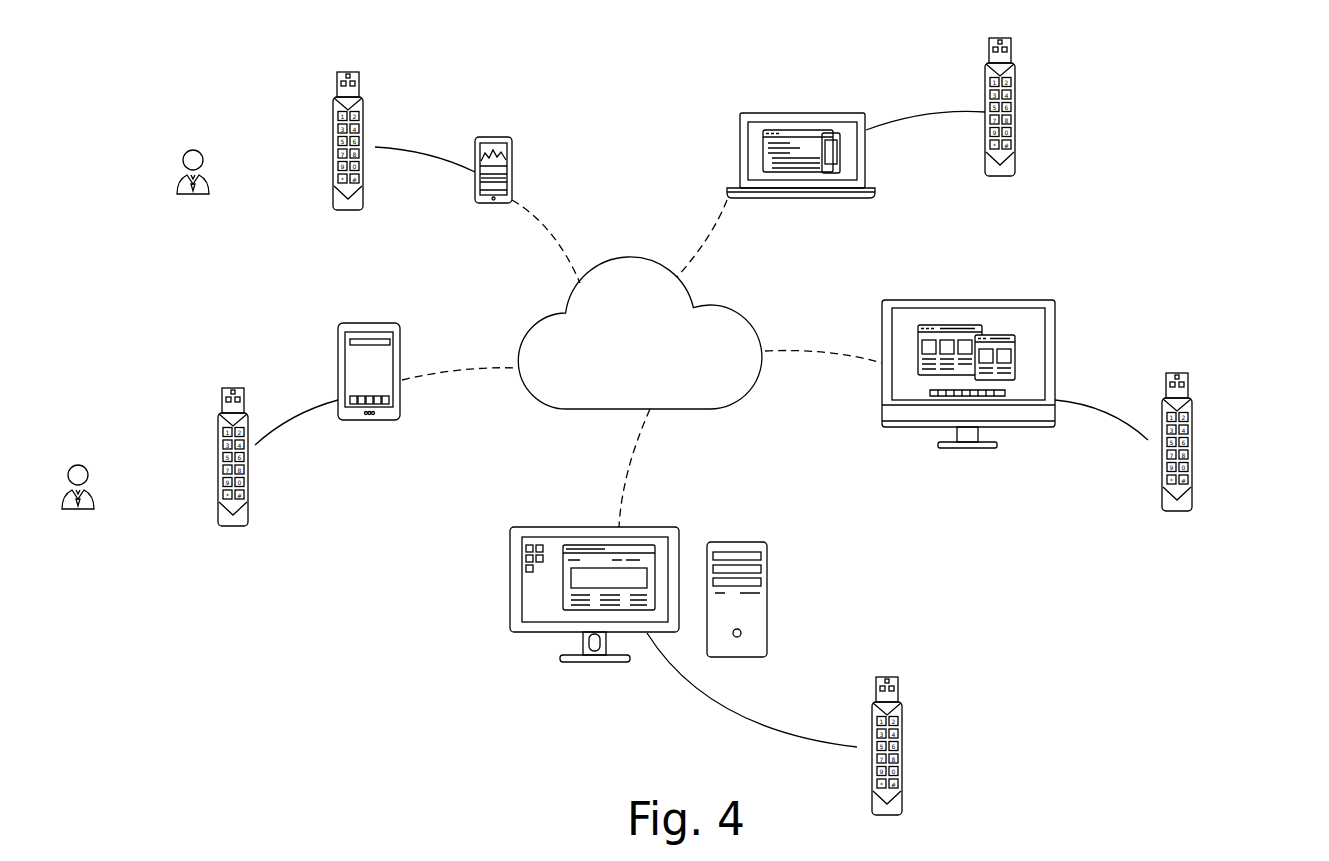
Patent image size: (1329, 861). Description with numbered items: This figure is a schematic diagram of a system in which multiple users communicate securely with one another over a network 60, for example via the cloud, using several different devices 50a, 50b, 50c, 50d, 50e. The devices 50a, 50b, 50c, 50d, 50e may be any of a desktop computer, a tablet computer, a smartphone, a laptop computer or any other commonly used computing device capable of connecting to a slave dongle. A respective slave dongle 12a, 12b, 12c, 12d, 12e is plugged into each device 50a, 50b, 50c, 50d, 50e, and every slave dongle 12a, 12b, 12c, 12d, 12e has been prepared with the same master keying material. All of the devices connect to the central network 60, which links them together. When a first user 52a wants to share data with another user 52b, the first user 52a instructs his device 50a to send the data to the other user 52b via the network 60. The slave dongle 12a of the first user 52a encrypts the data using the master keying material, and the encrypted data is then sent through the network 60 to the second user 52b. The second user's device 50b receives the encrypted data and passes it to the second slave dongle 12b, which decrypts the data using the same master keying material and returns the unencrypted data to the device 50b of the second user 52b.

The slave dongle 12a is at (315, 147).
The slave dongle 12b is at (198, 463).
The slave dongle 12c is at (922, 753).
The slave dongle 12d is at (1212, 447).
The slave dongle 12e is at (1035, 113).
The device 50a is at (493, 125).
The device 50b is at (370, 311).
The device 50c is at (535, 645).
The device 50d is at (967, 285).
The device 50e is at (803, 100).
The first user 52a is at (221, 179).
The second user 52b is at (106, 494).
The network 60 is at (640, 333).